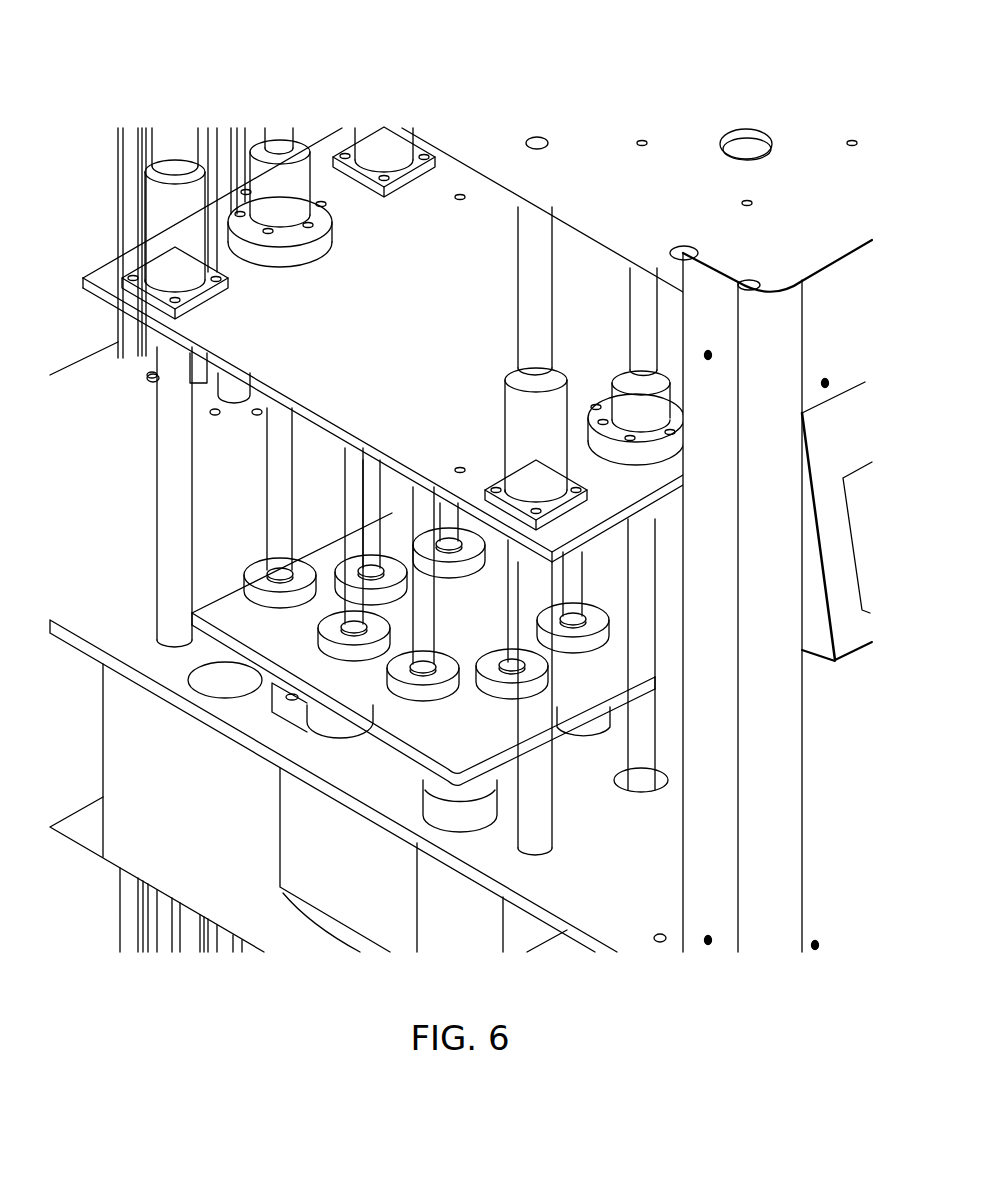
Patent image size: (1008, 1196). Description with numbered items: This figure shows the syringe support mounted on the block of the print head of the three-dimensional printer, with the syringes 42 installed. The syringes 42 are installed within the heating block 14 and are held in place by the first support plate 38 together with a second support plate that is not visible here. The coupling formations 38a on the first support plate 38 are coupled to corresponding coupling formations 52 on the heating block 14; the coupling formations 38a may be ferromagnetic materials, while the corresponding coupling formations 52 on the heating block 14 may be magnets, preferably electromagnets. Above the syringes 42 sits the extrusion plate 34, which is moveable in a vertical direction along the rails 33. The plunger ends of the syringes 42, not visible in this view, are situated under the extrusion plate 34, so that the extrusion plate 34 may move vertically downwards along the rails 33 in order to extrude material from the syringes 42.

The heating block 14 is at (465, 928).
The rails 33 is at (177, 143).
The extrusion plate 34 is at (404, 313).
The first support plate 38 is at (462, 809).
The coupling formations 38a is at (220, 682).
The syringes 42 is at (313, 528).
The corresponding coupling formations 52 is at (188, 662).